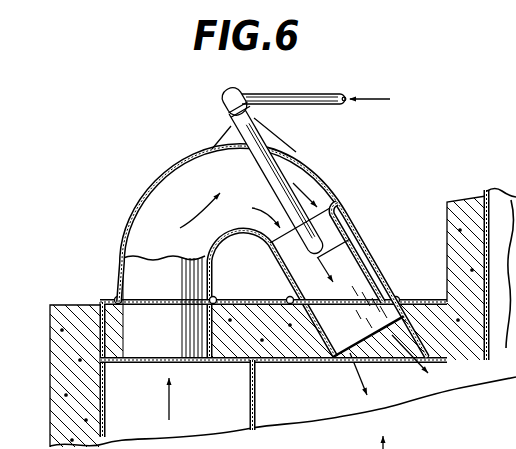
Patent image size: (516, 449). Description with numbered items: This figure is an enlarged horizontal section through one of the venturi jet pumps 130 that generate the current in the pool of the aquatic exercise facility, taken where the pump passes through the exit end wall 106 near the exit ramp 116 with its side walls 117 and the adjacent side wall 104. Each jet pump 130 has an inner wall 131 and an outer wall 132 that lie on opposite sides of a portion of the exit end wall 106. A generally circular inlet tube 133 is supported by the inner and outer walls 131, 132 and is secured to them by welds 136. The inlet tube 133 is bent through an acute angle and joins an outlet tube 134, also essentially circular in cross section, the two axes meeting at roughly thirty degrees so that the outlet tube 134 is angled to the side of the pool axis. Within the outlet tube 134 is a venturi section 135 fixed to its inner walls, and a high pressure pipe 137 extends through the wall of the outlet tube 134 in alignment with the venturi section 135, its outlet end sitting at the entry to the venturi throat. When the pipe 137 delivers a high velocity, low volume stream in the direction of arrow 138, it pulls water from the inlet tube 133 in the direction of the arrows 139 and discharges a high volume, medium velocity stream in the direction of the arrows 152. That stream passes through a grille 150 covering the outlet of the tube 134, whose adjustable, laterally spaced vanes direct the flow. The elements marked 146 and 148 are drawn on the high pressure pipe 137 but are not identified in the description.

The side wall 104 is at (67, 303).
The exit end wall 106 is at (240, 320).
The exit ramp 116 is at (491, 203).
The side walls 117 is at (447, 207).
The venturi jet pump 130 is at (162, 155).
The inner wall 131 is at (281, 362).
The outer wall 132 is at (109, 300).
The inlet tube 133 is at (147, 350).
The outlet tube 134 is at (371, 257).
The venturi section 135 is at (340, 224).
The welds 136 is at (119, 298).
The high pressure pipe 137 is at (283, 178).
The arrow 138 is at (350, 240).
The arrows 139 is at (180, 228).
The handle rod 146 is at (308, 96).
The cap 148 is at (224, 96).
The grille 150 is at (351, 354).
The arrows 152 is at (404, 358).